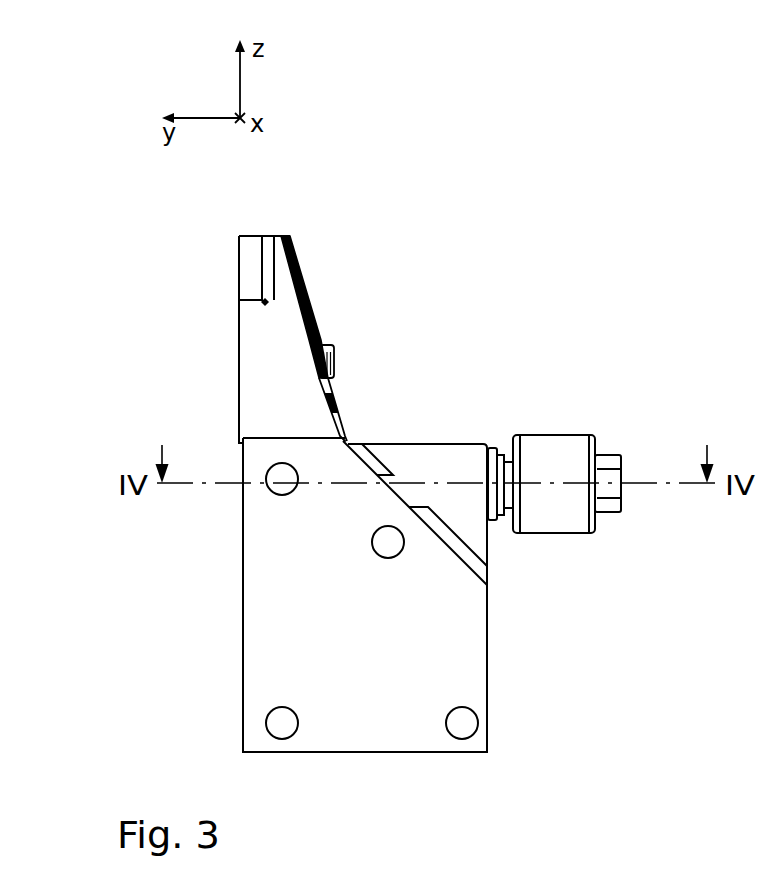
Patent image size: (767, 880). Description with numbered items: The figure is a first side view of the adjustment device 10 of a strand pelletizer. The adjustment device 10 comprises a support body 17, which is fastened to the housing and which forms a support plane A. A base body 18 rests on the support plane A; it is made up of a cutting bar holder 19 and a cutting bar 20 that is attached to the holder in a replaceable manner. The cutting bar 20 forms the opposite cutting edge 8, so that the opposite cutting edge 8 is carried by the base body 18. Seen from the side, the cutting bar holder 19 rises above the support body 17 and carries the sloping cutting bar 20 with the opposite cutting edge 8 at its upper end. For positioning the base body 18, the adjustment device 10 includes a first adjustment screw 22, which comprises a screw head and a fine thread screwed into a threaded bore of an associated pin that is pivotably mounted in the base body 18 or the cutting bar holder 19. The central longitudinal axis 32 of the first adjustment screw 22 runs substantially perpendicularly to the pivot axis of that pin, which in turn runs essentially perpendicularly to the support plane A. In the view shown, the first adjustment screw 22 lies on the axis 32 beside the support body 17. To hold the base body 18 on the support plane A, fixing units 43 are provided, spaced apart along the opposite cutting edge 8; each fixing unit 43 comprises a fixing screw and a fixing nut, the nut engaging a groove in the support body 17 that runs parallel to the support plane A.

The opposite cutting edge 8 is at (238, 236).
The adjustment device 10 is at (326, 218).
The support body 17 is at (241, 615).
The base body 18 is at (321, 300).
The cutting bar holder 19 is at (260, 372).
The cutting bar 20 is at (250, 268).
The first adjustment screw 22 is at (544, 430).
The central longitudinal axis 32 is at (577, 483).
The fixing unit 43 is at (339, 348).
The support plane A is at (347, 440).